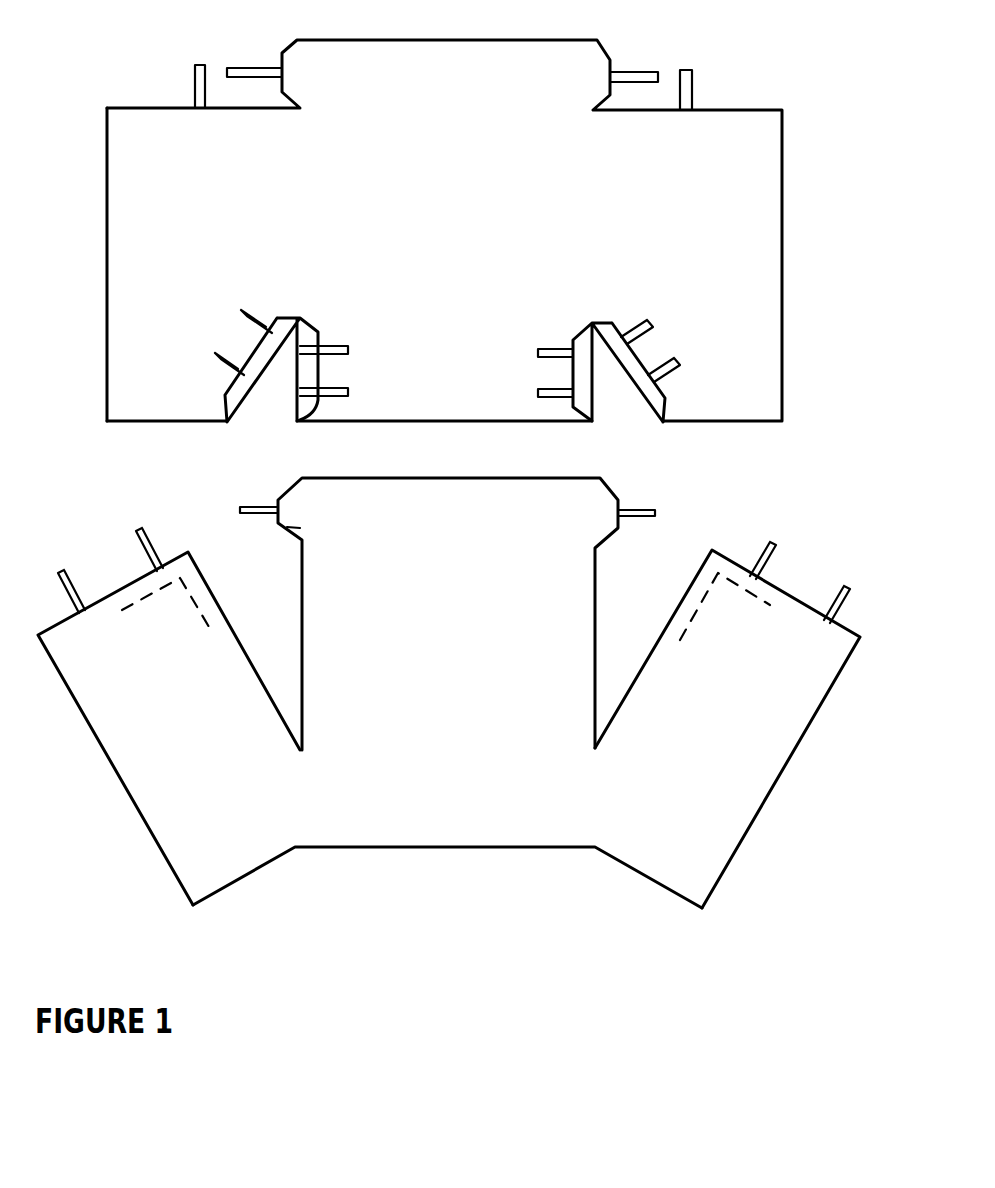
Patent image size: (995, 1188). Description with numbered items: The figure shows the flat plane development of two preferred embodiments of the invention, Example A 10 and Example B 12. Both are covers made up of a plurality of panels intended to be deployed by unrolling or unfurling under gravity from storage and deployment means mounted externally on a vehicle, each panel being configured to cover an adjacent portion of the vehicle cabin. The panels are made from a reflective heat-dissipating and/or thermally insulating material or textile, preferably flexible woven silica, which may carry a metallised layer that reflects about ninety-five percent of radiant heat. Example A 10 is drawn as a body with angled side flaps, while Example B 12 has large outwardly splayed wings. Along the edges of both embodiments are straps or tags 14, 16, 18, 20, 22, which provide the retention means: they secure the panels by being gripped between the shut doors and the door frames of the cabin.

The Example A 10 is at (444, 230).
The Example B 12 is at (447, 693).
The strap or tag 14 is at (845, 577).
The strap or tag 16 is at (130, 527).
The strap or tag 18 is at (650, 75).
The strap or tag 20 is at (212, 353).
The strap or tag 22 is at (662, 325).